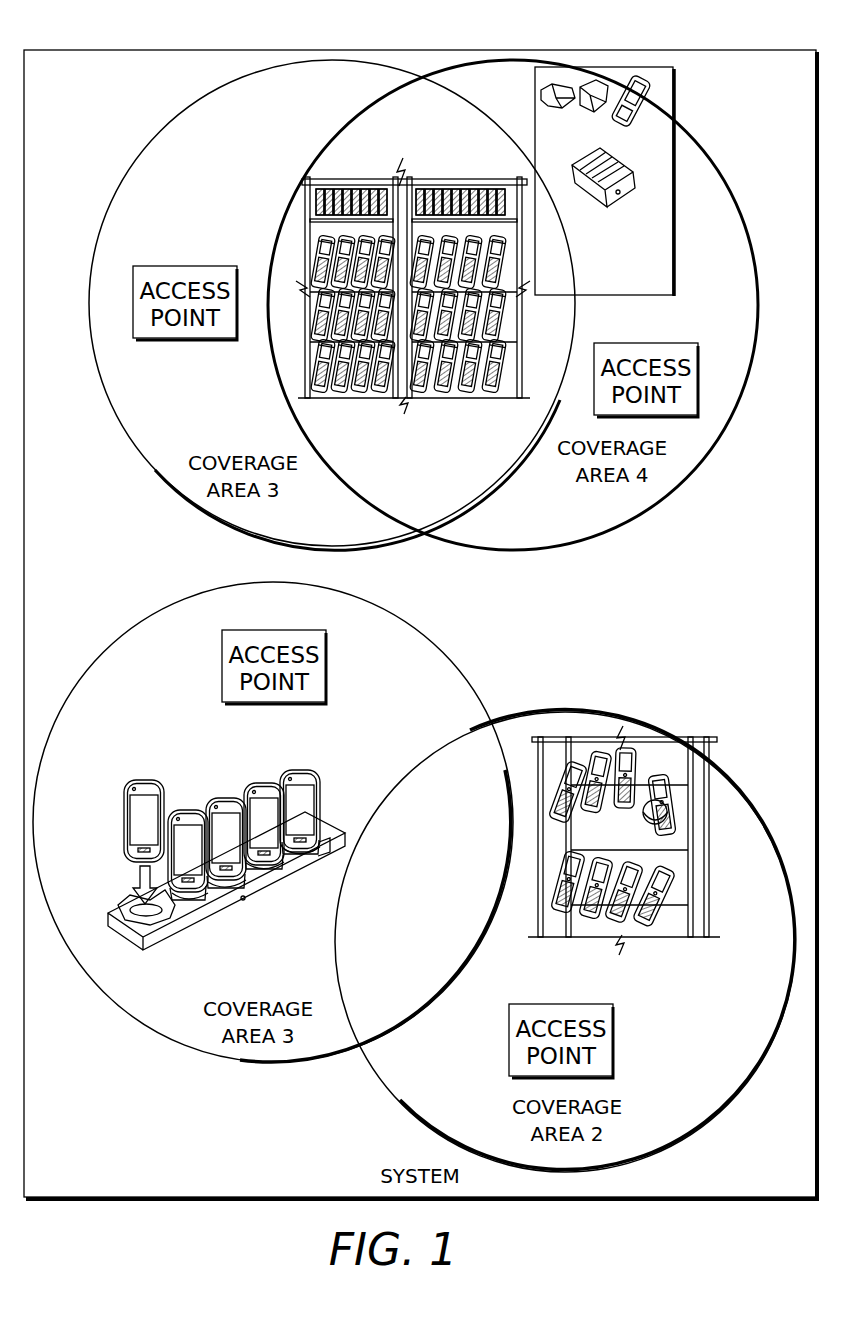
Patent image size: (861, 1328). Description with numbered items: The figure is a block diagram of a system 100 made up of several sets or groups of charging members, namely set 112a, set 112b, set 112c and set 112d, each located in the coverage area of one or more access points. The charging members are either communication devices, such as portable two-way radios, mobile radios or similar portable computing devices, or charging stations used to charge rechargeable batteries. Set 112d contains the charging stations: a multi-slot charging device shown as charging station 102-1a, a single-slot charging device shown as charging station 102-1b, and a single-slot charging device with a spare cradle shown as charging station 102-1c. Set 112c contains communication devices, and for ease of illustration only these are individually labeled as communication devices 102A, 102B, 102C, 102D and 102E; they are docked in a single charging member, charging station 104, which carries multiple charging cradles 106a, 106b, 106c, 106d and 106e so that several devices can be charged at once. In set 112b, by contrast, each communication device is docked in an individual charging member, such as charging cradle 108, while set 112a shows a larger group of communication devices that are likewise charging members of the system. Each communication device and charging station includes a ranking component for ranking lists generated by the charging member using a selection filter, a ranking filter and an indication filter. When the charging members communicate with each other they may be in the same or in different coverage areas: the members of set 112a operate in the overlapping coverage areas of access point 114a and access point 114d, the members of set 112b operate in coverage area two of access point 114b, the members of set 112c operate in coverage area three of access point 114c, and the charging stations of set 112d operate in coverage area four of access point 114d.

The system 100 is at (696, 50).
The charging station 102-1a is at (636, 185).
The charging station 102-1b is at (645, 92).
The charging station 102-1c is at (540, 96).
The communication device 102A is at (145, 812).
The communication device 102B is at (186, 835).
The communication device 102C is at (230, 825).
The communication device 102D is at (266, 810).
The communication device 102E is at (300, 795).
The charging station 104 is at (342, 856).
The charging cradle 106a is at (128, 924).
The charging cradle 106b is at (212, 906).
The charging cradle 106c is at (254, 893).
The charging cradle 106d is at (283, 878).
The charging cradle 106e is at (321, 862).
The charging cradle 108 is at (668, 806).
The set 112a is at (386, 456).
The set 112b is at (668, 861).
The set 112c is at (232, 851).
The set 112d is at (595, 181).
The access point 114a is at (183, 266).
The access point 114b is at (563, 1004).
The access point 114c is at (277, 630).
The access point 114d is at (647, 343).